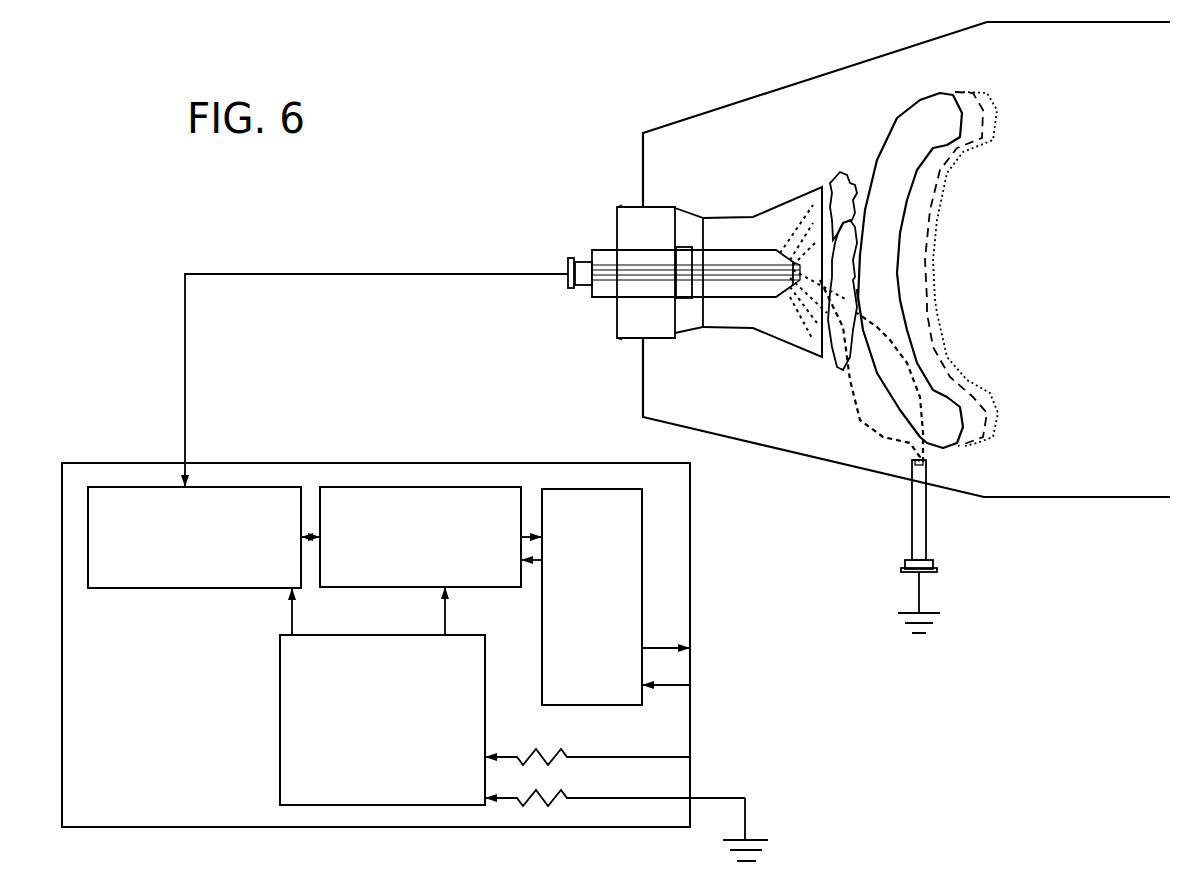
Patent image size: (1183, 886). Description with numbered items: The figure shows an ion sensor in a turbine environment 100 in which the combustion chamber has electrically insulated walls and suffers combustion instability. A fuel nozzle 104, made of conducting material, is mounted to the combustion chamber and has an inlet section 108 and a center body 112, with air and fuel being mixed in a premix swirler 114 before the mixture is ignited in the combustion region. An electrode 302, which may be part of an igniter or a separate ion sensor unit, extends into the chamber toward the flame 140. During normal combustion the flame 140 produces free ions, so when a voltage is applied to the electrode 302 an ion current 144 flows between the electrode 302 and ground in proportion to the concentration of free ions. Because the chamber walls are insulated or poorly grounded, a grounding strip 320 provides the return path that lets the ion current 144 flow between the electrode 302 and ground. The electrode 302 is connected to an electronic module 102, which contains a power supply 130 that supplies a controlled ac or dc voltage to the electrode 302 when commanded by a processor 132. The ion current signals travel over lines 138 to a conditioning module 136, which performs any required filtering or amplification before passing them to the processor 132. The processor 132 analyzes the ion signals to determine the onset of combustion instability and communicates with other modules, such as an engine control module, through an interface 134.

The turbine environment 100 is at (872, 675).
The electronic module 102 is at (683, 507).
The fuel nozzle 104 is at (630, 357).
The inlet section 108 is at (610, 312).
The center body 112 is at (610, 248).
The premix swirler 114 is at (688, 240).
The power supply 130 is at (194, 525).
The processor 132 is at (422, 537).
The interface 134 is at (616, 597).
The conditioning module 136 is at (382, 696).
The lines 138 is at (679, 760).
The flame 140 is at (958, 243).
The ion current 144 is at (860, 396).
The electrode 302 is at (752, 300).
The grounding strip 320 is at (918, 545).